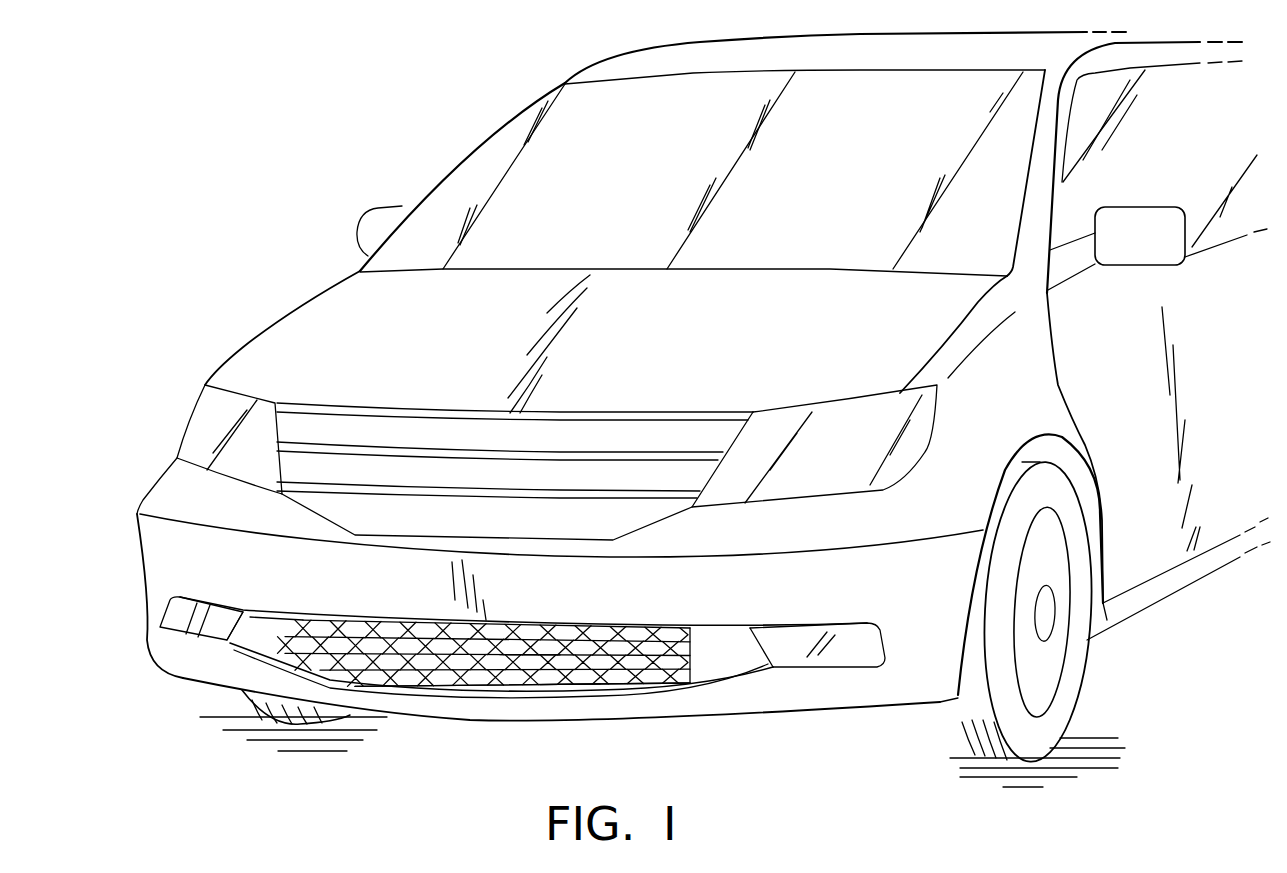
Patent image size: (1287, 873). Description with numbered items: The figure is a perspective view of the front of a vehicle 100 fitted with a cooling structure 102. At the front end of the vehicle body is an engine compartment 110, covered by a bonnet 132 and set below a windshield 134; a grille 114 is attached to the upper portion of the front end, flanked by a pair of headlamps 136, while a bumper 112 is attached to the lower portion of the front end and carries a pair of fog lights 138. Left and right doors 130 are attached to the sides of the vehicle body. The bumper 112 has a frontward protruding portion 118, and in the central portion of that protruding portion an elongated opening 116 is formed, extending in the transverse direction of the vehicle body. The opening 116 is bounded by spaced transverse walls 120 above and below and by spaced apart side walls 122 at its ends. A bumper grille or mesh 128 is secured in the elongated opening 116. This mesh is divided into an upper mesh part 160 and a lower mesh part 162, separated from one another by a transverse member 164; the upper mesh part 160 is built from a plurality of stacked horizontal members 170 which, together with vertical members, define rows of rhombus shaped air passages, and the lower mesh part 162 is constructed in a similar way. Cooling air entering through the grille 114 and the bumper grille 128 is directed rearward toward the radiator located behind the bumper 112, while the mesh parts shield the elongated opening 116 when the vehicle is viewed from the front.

The vehicle 100 is at (306, 126).
The cooling structure 102 is at (137, 478).
The engine compartment 110 is at (338, 312).
The bumper 112 is at (168, 569).
The grille 114 is at (630, 453).
The elongated opening 116 is at (713, 638).
The frontward protruding portion 118 is at (730, 703).
The transverse walls 120 is at (396, 628).
The side walls 122 is at (230, 627).
The bumper grille 128 is at (461, 691).
The door 130 is at (1150, 548).
The bonnet 132 is at (258, 363).
The windshield 134 is at (553, 163).
The headlamp 136 is at (206, 420).
The fog light 138 is at (203, 630).
The upper mesh part 160 is at (544, 624).
The lower mesh part 162 is at (569, 694).
The transverse member 164 is at (531, 667).
The horizontal members 170 is at (360, 630).